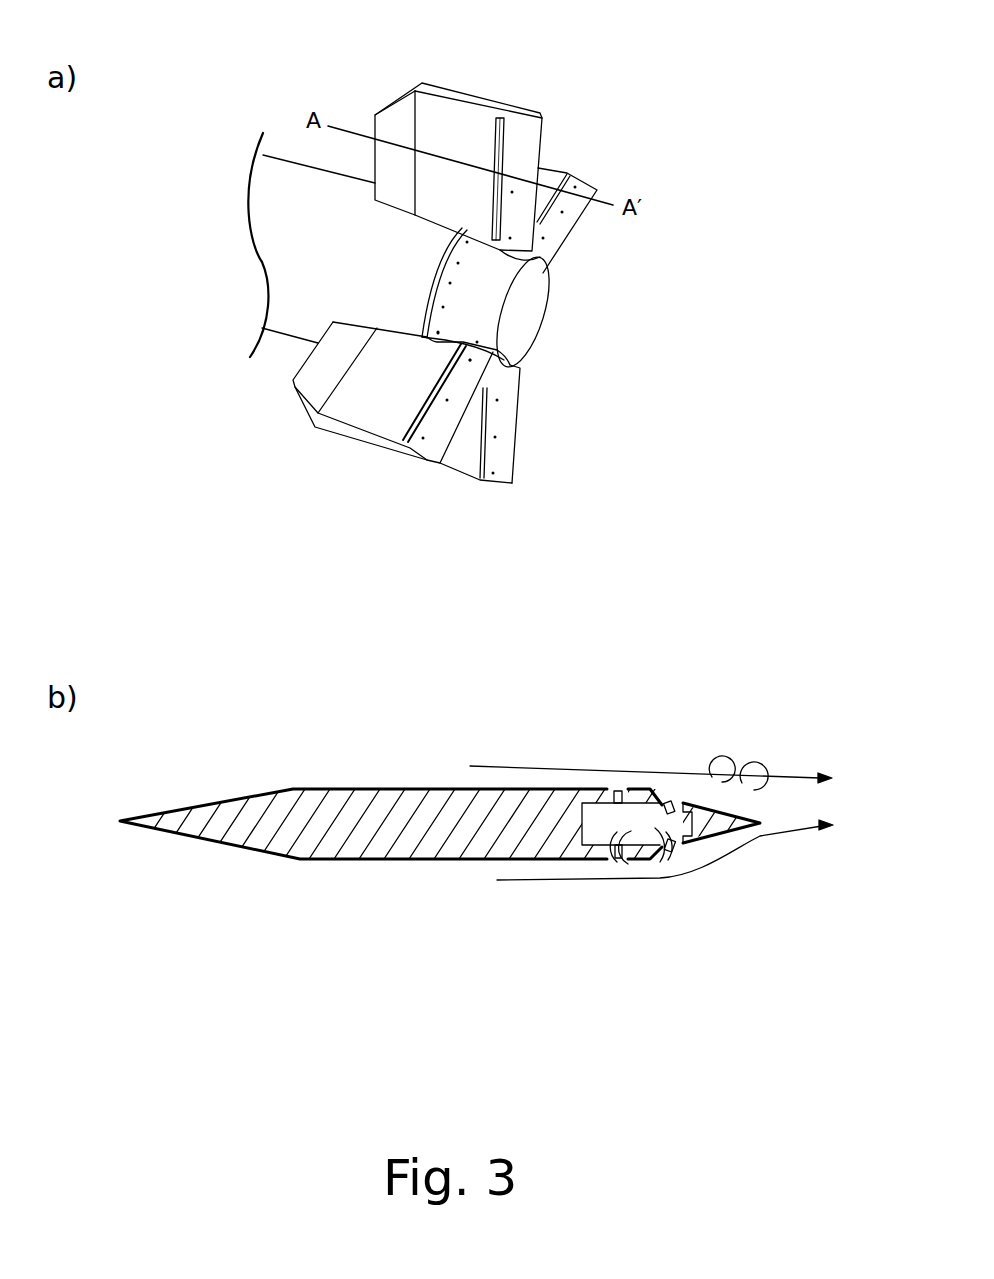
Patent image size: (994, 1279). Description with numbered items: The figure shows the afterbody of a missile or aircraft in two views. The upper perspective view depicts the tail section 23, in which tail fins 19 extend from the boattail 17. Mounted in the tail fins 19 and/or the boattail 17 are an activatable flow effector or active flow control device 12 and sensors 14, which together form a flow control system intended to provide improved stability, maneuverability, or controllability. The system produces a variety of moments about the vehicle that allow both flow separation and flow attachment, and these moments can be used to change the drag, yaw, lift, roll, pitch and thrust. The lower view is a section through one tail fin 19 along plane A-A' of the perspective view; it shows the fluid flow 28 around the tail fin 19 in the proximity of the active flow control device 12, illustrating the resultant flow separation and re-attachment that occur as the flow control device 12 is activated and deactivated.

The tail fin 19 is at (453, 120).
The activatable flow effector or active flow control device 12 is at (507, 120).
The sensors 14 is at (517, 137).
The boattail 17 is at (483, 293).
The tail section 23 is at (312, 283).
The fluid flow 28 is at (777, 777).